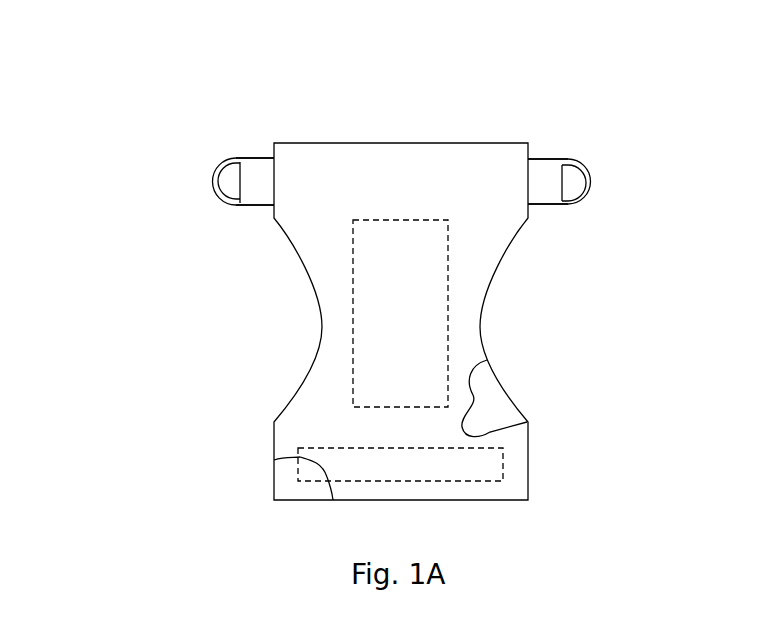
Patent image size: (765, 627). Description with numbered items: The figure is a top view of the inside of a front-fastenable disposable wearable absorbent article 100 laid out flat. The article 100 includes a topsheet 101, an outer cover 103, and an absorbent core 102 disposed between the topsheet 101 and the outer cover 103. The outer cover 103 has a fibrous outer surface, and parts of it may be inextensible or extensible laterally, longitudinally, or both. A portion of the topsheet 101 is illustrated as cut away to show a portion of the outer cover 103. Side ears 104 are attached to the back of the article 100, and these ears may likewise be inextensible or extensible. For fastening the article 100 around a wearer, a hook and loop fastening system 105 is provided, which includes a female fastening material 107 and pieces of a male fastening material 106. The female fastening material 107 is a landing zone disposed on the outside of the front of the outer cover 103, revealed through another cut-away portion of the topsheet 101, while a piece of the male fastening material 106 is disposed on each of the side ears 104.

The front-fastenable disposable wearable absorbent article 100 is at (175, 125).
The topsheet 101 is at (334, 192).
The absorbent core 102 is at (448, 298).
The outer cover 103 is at (485, 408).
The side ears 104 is at (255, 158).
The hook and loop fastening system 105 is at (211, 181).
The male fastening material 106 is at (233, 205).
The female fastening material 107 is at (315, 482).